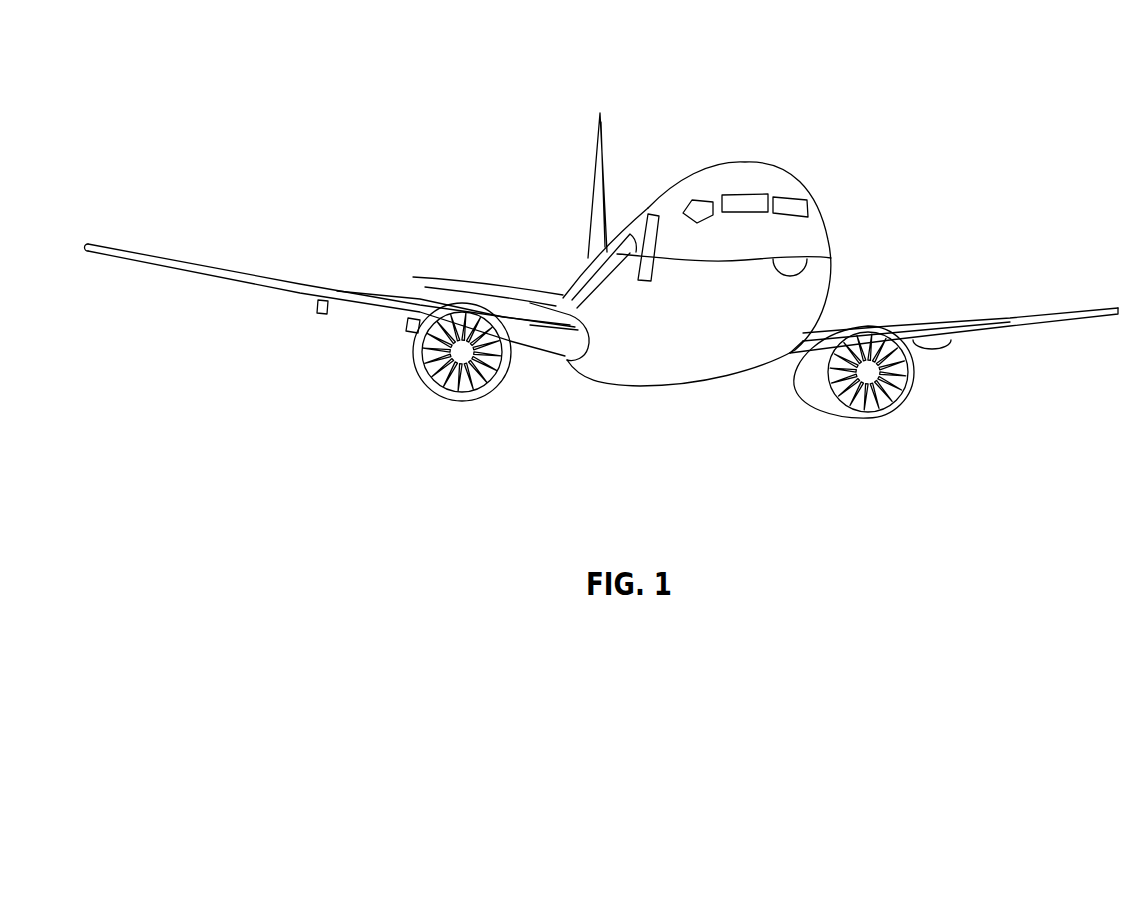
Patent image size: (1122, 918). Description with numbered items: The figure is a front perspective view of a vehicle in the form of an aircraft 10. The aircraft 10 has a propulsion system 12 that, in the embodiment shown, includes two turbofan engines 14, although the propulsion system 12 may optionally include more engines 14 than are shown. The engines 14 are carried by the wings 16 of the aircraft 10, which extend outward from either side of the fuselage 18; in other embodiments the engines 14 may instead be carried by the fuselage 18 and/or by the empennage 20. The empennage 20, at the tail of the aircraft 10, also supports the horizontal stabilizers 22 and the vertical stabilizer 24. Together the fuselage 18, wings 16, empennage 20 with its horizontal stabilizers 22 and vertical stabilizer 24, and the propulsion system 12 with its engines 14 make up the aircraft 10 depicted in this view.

The aircraft 10 is at (355, 58).
The propulsion system 12 is at (953, 410).
The turbofan engines 14 is at (455, 397).
The wings 16 is at (226, 268).
The fuselage 18 is at (828, 228).
The empennage 20 is at (588, 257).
The horizontal stabilizers 22 is at (452, 278).
The vertical stabilizer 24 is at (597, 150).